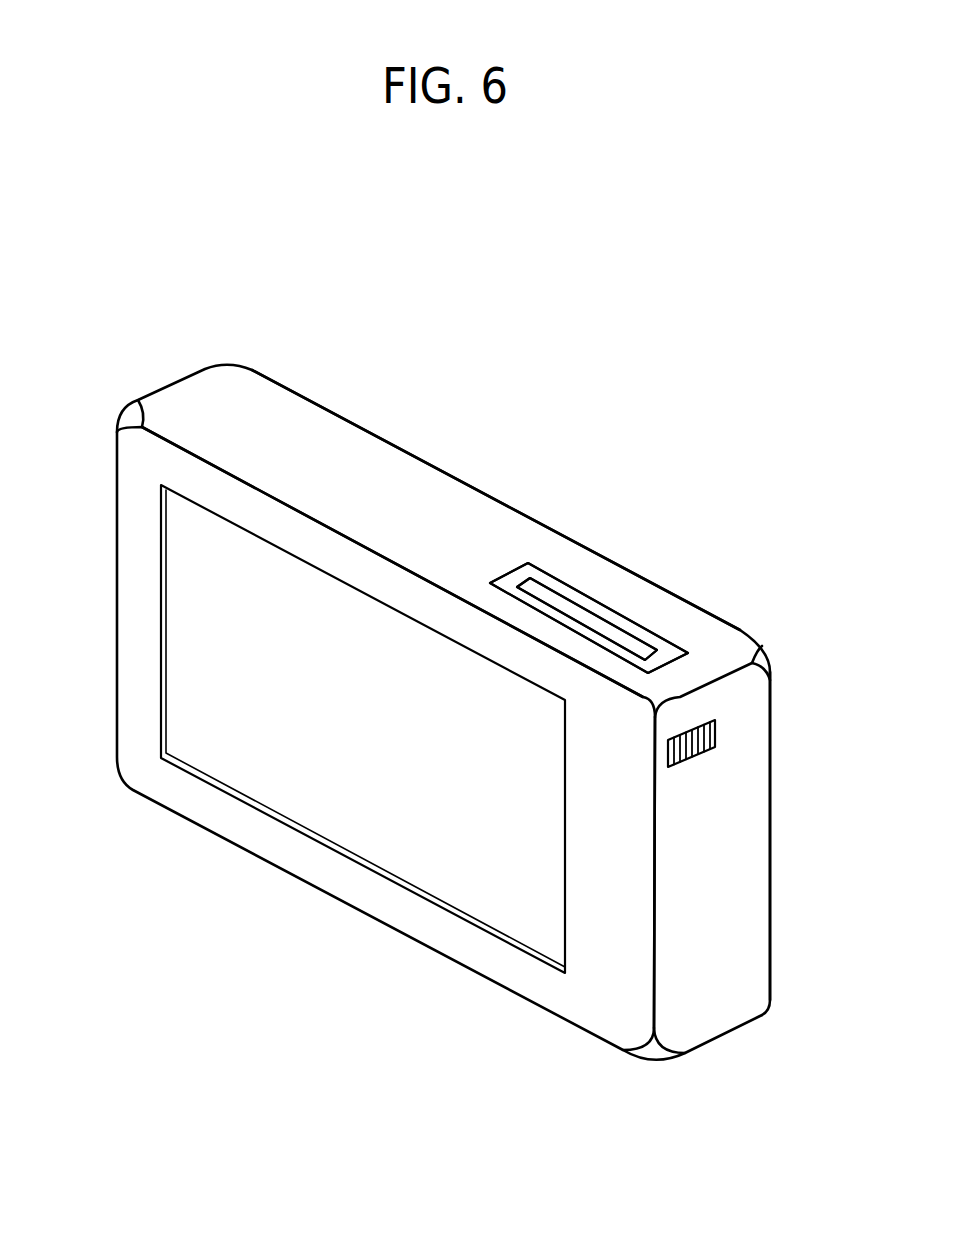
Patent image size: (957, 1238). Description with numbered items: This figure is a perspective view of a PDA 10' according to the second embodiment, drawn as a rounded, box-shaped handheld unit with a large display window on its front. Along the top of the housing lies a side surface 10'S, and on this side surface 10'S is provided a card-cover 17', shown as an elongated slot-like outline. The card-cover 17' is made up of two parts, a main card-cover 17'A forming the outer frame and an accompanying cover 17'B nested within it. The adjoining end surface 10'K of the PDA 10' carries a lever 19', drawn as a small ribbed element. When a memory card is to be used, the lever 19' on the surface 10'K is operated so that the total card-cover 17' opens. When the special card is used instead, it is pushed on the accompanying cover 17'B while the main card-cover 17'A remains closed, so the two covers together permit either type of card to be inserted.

The PDA 10' is at (418, 639).
The side surface 10'S is at (441, 498).
The card-cover 17' is at (560, 525).
The main card-cover 17'A is at (589, 543).
The accompanying cover 17'B is at (606, 573).
The lever 19' is at (762, 739).
The surface 10'K is at (769, 850).